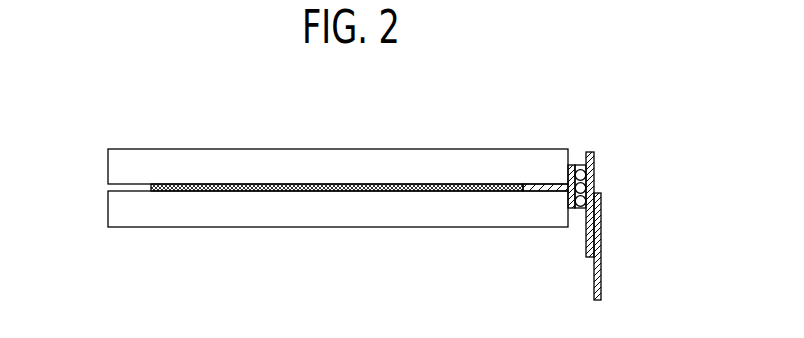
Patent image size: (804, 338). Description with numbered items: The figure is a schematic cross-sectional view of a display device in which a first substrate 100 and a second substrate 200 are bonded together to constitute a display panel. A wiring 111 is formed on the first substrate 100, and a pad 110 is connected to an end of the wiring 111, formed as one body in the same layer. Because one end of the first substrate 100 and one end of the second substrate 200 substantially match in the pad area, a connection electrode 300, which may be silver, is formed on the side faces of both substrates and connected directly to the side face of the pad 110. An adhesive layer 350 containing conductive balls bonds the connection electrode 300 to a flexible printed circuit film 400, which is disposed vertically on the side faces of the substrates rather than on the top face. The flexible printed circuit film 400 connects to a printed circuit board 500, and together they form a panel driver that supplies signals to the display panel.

The first substrate 100 is at (108, 207).
The pad 110 is at (535, 192).
The wiring 111 is at (312, 192).
The second substrate 200 is at (108, 170).
The connection electrode 300 is at (570, 209).
The adhesive layer 350 is at (580, 163).
The flexible printed circuit film 400 is at (590, 152).
The printed circuit board 500 is at (601, 242).